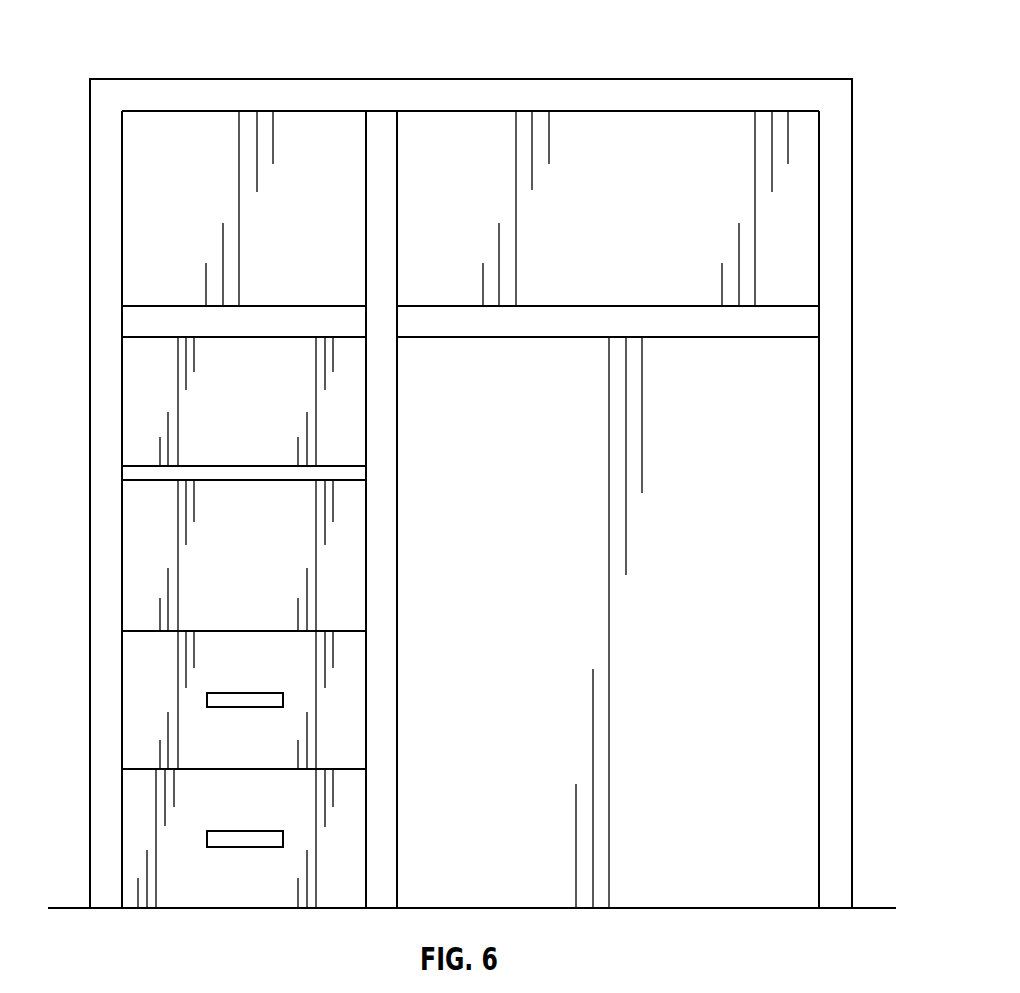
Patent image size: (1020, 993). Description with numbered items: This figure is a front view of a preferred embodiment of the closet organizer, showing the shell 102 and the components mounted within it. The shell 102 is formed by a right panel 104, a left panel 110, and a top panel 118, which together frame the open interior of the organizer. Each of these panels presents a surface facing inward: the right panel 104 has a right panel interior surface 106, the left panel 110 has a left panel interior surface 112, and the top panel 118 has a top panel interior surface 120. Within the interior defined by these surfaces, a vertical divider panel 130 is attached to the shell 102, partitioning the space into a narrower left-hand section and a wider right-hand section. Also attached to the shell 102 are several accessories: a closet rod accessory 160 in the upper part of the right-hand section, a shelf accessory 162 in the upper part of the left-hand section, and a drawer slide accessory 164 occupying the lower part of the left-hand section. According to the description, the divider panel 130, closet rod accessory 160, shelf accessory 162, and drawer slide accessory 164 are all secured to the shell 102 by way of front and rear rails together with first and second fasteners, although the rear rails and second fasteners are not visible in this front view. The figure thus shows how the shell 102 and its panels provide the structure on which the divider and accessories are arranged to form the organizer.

The shell 102 is at (483, 90).
The right panel 104 is at (833, 583).
The right panel interior surface 106 is at (824, 674).
The left panel 110 is at (90, 476).
The left panel interior surface 112 is at (118, 521).
The top panel 118 is at (205, 90).
The top panel interior surface 120 is at (656, 111).
The divider panel 130 is at (385, 216).
The closet rod accessory 160 is at (623, 322).
The shelf accessory 162 is at (163, 322).
The drawer slide accessory 164 is at (145, 683).